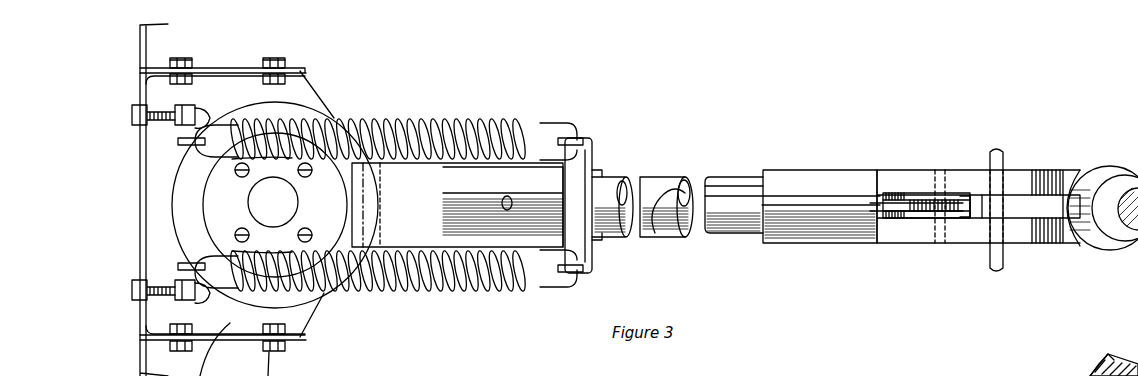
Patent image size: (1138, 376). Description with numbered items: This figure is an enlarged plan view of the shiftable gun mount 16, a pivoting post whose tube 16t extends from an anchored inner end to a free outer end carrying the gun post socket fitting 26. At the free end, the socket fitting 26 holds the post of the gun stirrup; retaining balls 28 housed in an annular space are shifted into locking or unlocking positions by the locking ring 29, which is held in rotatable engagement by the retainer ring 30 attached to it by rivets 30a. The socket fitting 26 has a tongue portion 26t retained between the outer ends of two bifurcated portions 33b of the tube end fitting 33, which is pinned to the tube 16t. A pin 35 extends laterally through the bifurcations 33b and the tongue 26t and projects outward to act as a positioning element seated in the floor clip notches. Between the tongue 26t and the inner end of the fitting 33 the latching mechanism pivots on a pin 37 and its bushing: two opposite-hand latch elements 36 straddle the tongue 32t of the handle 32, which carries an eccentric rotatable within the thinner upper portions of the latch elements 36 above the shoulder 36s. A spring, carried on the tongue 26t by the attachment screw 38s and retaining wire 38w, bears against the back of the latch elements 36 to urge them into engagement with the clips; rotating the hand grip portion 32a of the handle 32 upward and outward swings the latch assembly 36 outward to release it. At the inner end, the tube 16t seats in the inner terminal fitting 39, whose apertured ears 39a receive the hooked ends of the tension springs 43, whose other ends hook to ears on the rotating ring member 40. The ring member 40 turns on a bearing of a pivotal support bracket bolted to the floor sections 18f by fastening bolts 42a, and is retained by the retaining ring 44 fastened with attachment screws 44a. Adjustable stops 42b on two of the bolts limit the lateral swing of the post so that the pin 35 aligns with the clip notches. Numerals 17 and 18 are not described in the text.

The shiftable gun mount 16 is at (687, 163).
The tube 16t is at (713, 233).
The spring tensioning assembly 17 is at (330, 107).
The mounting bracket 18 is at (140, 218).
The floor sections 18f is at (183, 43).
The gun post socket fitting 26 is at (1070, 240).
The tongue portion 26t is at (1030, 207).
The retaining balls 28 is at (1063, 375).
The locking ring 29 is at (1093, 178).
The retainer ring 30 is at (1110, 357).
The rivets 30a is at (1108, 355).
The handle 32 is at (827, 200).
The hand grip portion 32a is at (720, 193).
The tongue of the handle 32t is at (890, 207).
The tube end fitting 33 is at (792, 183).
The bifurcated portions 33b is at (970, 185).
The pin 35 is at (998, 268).
The latch elements 36 is at (930, 195).
The shoulder 36s is at (940, 198).
The pin 37 is at (967, 375).
The attachment screw 38s is at (1027, 375).
The retaining wire 38w is at (993, 375).
The inner terminal fitting 39 is at (457, 205).
The apertured ears 39a is at (584, 271).
The rotating ring member 40 is at (323, 297).
The fastening bolts 42a is at (193, 62).
The adjustable stops 42b is at (177, 130).
The tension springs 43 is at (412, 120).
The retaining ring 44 is at (233, 195).
The attachment screws 44a is at (253, 185).